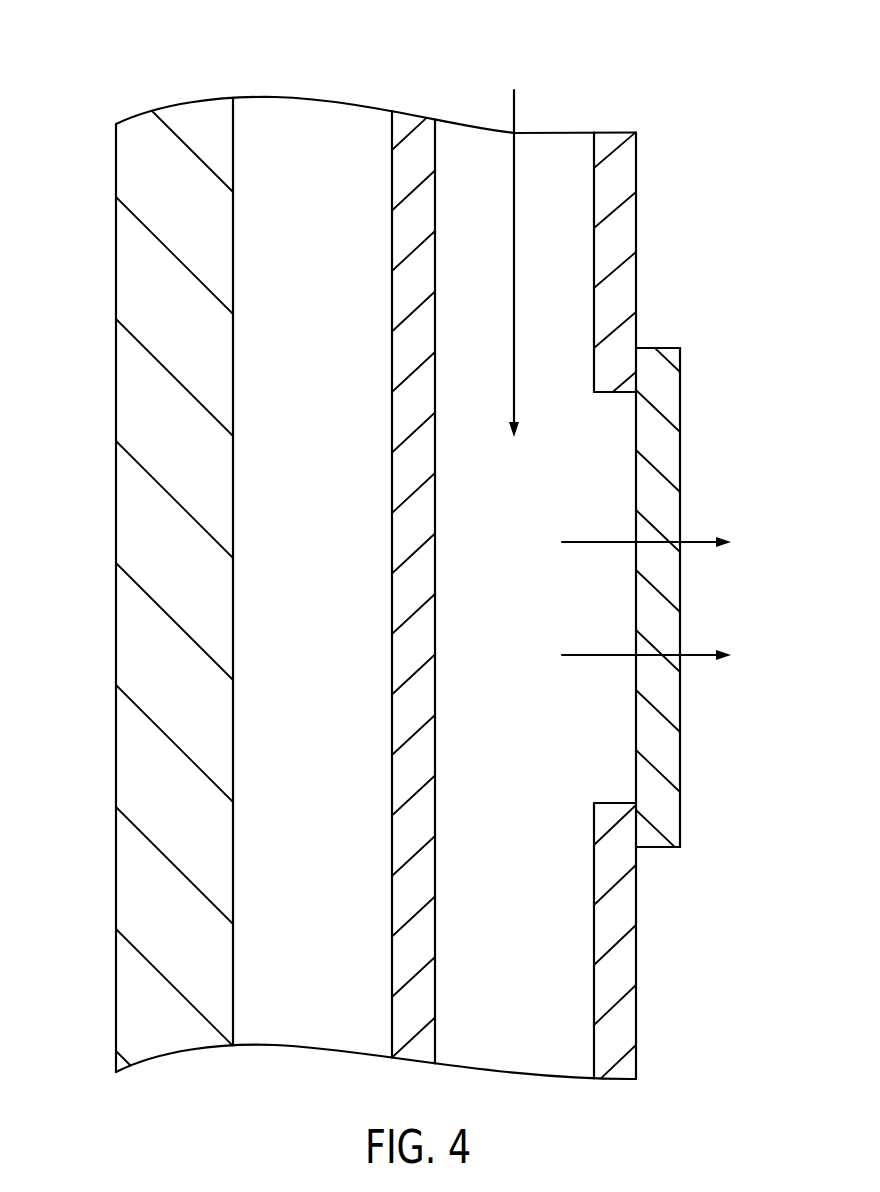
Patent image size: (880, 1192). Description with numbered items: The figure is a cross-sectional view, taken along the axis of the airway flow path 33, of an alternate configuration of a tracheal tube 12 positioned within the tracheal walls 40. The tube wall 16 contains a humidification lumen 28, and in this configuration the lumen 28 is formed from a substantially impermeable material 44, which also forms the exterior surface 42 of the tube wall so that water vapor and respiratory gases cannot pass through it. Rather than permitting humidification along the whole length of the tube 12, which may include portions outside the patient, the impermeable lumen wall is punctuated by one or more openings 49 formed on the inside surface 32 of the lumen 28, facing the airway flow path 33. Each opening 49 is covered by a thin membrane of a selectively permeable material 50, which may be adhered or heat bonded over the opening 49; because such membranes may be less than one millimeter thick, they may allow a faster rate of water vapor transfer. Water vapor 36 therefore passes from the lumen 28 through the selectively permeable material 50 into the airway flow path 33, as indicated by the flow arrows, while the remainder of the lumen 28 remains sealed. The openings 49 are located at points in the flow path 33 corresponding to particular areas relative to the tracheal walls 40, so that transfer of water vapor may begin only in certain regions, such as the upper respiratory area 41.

The tube 12 is at (413, 542).
The tube wall 16 is at (349, 463).
The lumen 28 is at (454, 758).
The inside surface 32 is at (650, 1028).
The airway flow path 33 is at (759, 614).
The water vapor 36 is at (517, 155).
The tracheal walls 40 is at (132, 490).
The upper respiratory area 41 is at (323, 618).
The exterior surface 42 is at (384, 302).
The substantially impermeable material 44 is at (405, 233).
The opening 49 is at (608, 751).
The selectively permeable material 50 is at (668, 458).